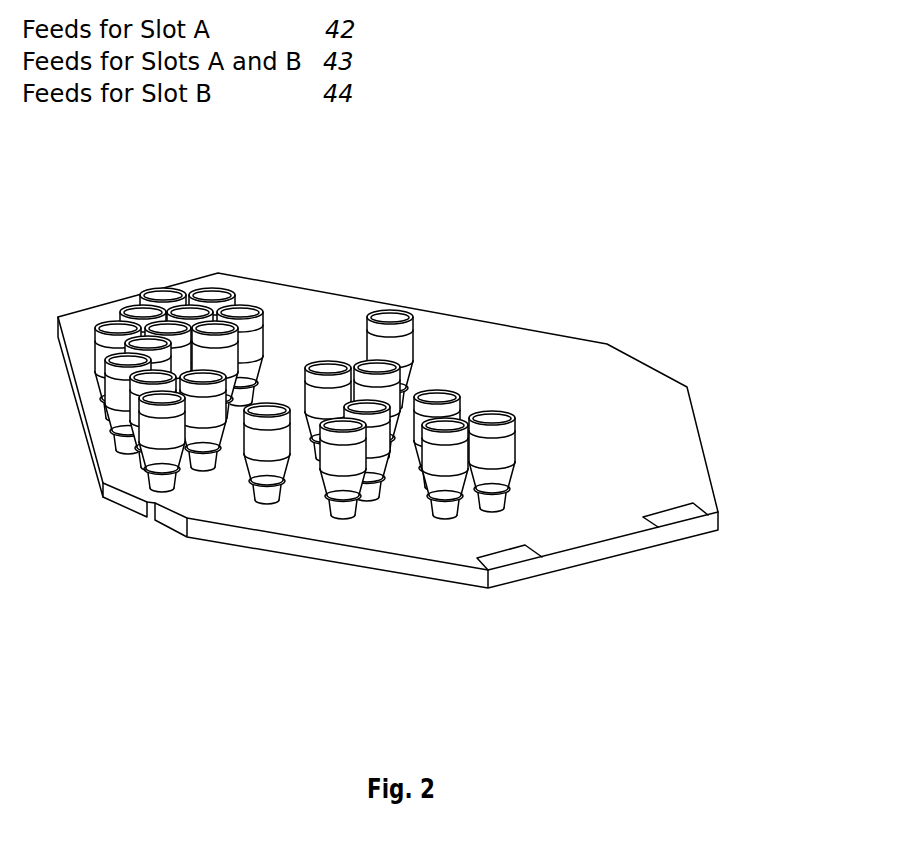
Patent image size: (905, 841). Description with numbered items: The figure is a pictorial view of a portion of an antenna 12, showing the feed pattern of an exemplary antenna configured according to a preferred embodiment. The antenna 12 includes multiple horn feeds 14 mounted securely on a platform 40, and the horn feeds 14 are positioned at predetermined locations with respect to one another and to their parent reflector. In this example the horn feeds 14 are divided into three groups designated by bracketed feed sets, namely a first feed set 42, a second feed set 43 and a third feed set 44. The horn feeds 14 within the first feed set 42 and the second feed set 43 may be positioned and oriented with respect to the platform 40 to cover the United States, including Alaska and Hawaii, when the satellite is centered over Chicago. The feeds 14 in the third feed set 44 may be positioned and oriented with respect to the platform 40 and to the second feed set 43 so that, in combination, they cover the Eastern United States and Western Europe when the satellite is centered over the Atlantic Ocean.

The antenna 12 is at (438, 431).
The horn feeds 14 is at (392, 312).
The platform 40 is at (560, 338).
The first feed set 42 is at (77, 330).
The second feed set 43 is at (254, 431).
The third feed set 44 is at (535, 412).